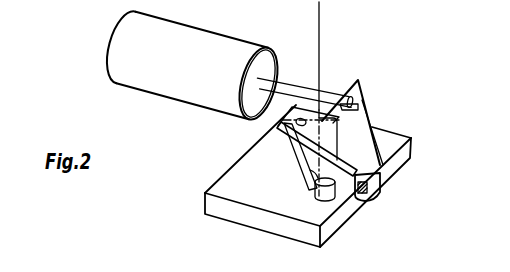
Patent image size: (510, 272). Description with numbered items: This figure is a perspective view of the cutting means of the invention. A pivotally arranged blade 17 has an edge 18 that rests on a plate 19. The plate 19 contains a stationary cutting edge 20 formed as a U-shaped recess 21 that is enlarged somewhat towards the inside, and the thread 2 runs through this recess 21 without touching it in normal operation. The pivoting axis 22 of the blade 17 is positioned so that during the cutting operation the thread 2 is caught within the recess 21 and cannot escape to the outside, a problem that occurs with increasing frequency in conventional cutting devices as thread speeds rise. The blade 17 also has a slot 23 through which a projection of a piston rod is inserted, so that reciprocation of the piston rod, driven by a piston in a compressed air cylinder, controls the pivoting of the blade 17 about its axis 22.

The thread 2 is at (321, 46).
The blade 17 is at (363, 123).
The edge 18 is at (292, 150).
The plate 19 is at (232, 180).
The stationary cutting edge 20 is at (341, 199).
The U-shaped recess 21 is at (328, 186).
The pivoting axis 22 is at (290, 119).
The slot 23 is at (358, 102).